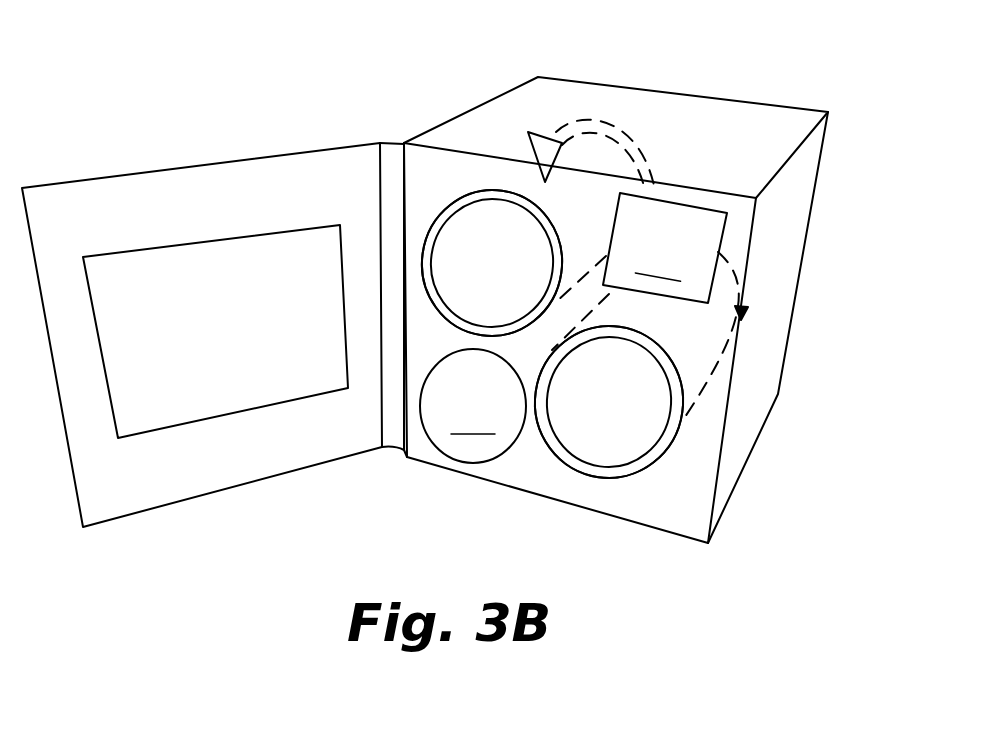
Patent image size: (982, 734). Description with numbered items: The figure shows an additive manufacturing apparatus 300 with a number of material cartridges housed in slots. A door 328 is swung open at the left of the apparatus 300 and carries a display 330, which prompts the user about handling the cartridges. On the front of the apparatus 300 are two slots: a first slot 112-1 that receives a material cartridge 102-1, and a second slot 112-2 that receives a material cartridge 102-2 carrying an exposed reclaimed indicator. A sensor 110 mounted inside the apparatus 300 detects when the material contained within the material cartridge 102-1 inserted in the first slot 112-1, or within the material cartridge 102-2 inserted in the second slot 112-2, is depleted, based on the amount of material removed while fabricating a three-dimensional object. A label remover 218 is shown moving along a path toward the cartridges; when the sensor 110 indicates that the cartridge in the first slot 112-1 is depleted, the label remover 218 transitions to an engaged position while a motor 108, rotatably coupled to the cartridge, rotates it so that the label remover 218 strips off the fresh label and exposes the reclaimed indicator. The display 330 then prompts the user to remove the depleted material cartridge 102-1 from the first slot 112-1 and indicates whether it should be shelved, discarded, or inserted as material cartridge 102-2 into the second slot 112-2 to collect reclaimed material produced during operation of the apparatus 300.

The additive manufacturing apparatus 300 is at (170, 80).
The door 328 is at (227, 188).
The display 330 is at (200, 403).
The material cartridge 102-1 is at (418, 193).
The first slot 112-1 is at (487, 178).
The material cartridge 102-2 is at (692, 446).
The second slot 112-2 is at (707, 380).
The motor 108 is at (473, 406).
The sensor 110 is at (665, 248).
The label remover 218 is at (560, 167).